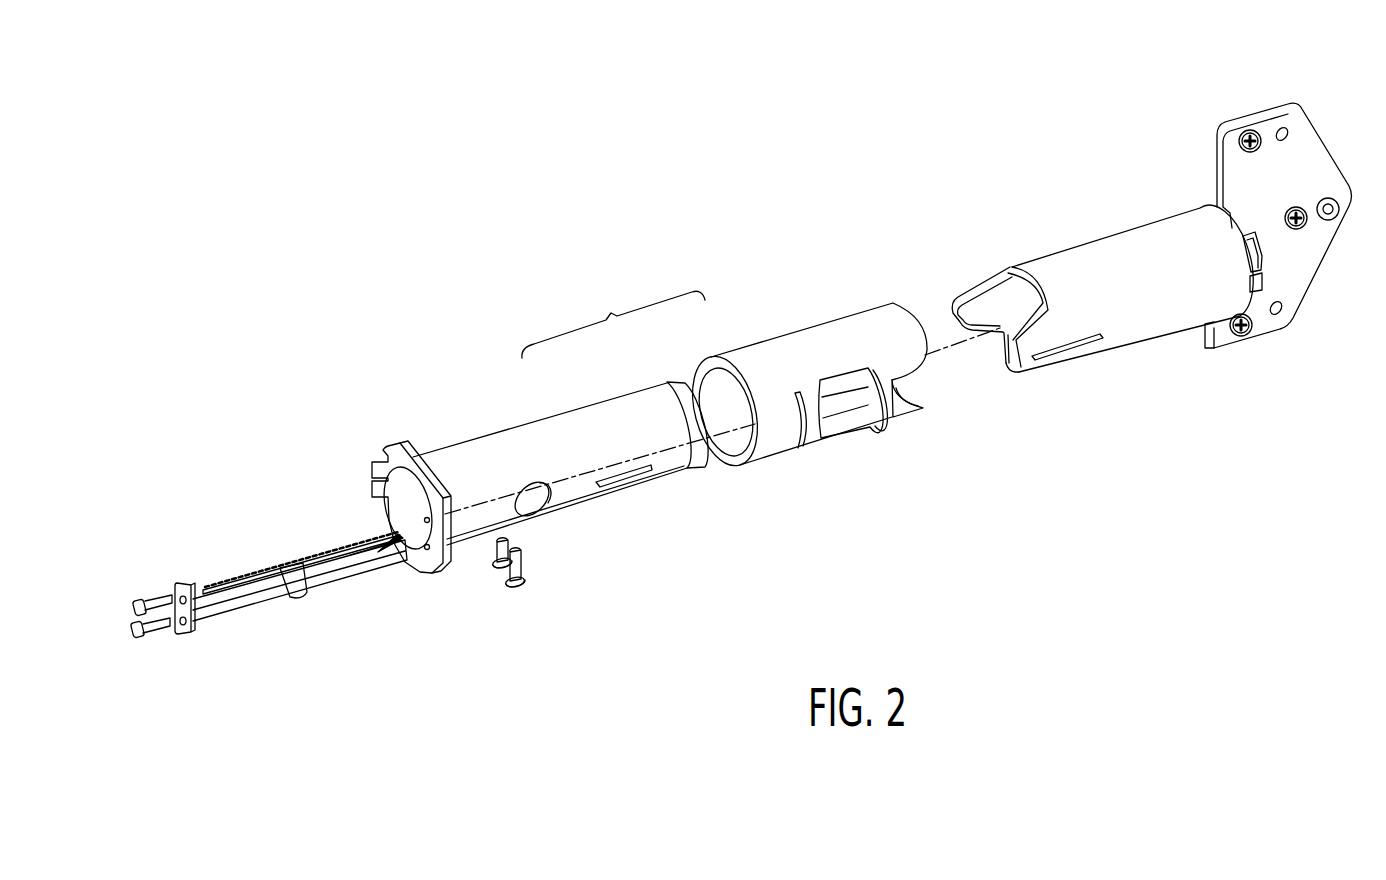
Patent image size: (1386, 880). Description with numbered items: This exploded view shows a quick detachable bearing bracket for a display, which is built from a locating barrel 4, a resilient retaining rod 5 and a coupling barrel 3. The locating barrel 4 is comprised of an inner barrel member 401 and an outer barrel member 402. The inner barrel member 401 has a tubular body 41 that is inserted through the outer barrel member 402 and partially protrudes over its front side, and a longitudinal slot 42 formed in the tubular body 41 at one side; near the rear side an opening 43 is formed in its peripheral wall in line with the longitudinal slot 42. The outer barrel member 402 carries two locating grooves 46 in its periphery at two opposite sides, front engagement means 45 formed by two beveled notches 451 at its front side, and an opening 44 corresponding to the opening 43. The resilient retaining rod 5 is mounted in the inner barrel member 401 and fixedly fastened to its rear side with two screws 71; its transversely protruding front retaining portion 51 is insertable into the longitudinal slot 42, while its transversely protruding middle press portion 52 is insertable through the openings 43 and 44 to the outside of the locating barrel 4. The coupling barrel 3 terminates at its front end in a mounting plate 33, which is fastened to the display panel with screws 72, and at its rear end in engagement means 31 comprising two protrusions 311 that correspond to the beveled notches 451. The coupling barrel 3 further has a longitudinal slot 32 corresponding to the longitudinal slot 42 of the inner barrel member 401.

The coupling barrel 3 is at (1093, 253).
The engagement means 31 is at (1030, 382).
The protrusions 311 is at (1021, 364).
The longitudinal slot 32 is at (1083, 347).
The mounting plate 33 is at (1314, 140).
The locating barrel 4 is at (673, 427).
The inner barrel member 401 is at (546, 434).
The outer barrel member 402 is at (754, 357).
The tubular body 41 is at (646, 404).
The longitudinal slot 42 is at (620, 485).
The opening 43 is at (535, 515).
The opening 44 is at (842, 412).
The front engagement means 45 is at (933, 446).
The beveled notches 451 is at (909, 414).
The locating grooves 46 is at (798, 449).
The resilient retaining rod 5 is at (232, 580).
The front retaining portion 51 is at (363, 558).
The middle press portion 52 is at (292, 572).
The screws 71 is at (160, 600).
The screws 72 is at (1252, 130).